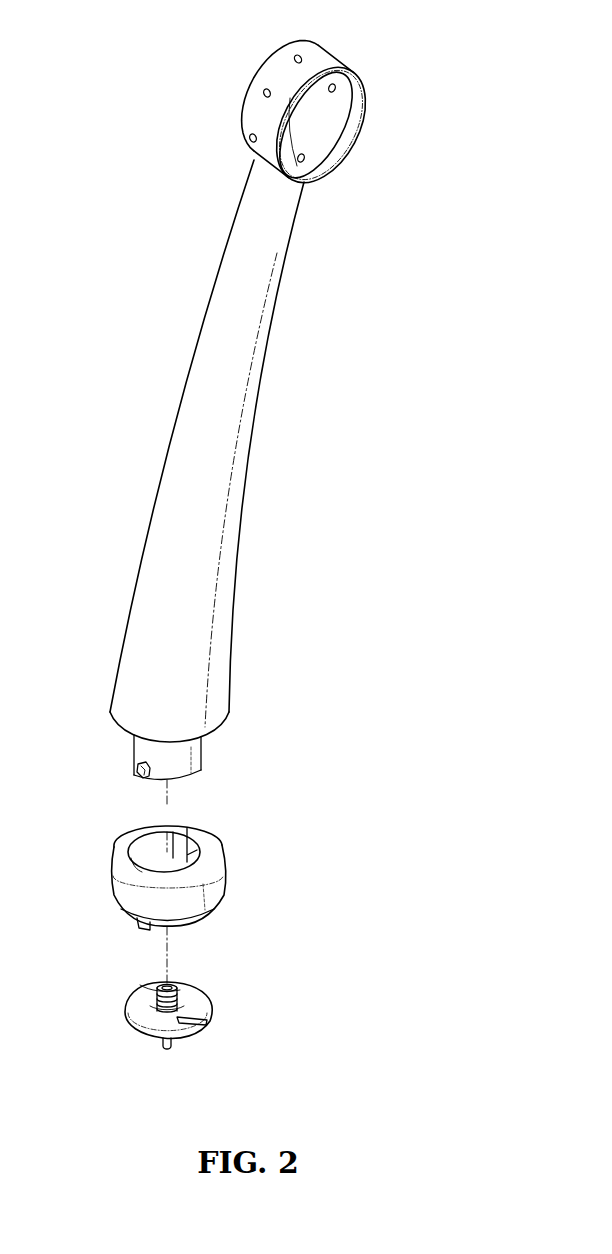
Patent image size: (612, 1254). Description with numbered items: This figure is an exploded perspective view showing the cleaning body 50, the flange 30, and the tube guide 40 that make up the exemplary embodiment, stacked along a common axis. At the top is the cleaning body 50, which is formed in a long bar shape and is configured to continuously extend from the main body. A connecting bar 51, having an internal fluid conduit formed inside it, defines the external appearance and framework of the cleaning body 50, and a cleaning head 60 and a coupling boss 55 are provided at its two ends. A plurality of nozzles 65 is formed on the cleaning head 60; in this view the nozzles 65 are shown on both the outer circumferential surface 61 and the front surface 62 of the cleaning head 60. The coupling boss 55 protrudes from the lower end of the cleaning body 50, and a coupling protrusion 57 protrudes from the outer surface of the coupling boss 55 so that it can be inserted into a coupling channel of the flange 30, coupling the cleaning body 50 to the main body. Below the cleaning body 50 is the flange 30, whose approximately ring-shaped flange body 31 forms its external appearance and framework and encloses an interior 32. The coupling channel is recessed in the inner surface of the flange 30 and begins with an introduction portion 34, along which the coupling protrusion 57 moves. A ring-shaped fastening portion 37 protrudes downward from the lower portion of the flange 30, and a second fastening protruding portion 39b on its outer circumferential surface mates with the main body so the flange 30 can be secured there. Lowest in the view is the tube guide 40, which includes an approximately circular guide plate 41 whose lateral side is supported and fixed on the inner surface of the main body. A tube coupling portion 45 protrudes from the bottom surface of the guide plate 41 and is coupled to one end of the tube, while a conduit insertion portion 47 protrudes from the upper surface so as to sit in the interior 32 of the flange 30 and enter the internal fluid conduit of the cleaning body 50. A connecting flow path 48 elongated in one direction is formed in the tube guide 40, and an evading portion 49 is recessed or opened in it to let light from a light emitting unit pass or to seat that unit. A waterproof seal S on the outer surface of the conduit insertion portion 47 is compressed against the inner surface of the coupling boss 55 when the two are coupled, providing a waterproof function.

The flange 30 is at (188, 897).
The flange body 31 is at (112, 884).
The interior 32 is at (133, 825).
The introduction portion 34 is at (203, 826).
The fastening portion 37 is at (193, 921).
The second fastening protruding portion 39b is at (132, 928).
The tube guide 40 is at (189, 1040).
The guide plate 41 is at (133, 1010).
The tube coupling portion 45 is at (168, 1050).
The conduit insertion portion 47 is at (145, 984).
The connecting flow path 48 is at (173, 982).
The evading portion 49 is at (196, 1028).
The waterproof seal S is at (155, 1010).
The cleaning body 50 is at (210, 481).
The connecting bar 51 is at (167, 515).
The coupling boss 55 is at (203, 743).
The coupling protrusion 57 is at (137, 770).
The cleaning head 60 is at (309, 126).
The outer circumferential surface 61 is at (248, 117).
The front surface 62 is at (318, 135).
The nozzles 65 is at (294, 57).